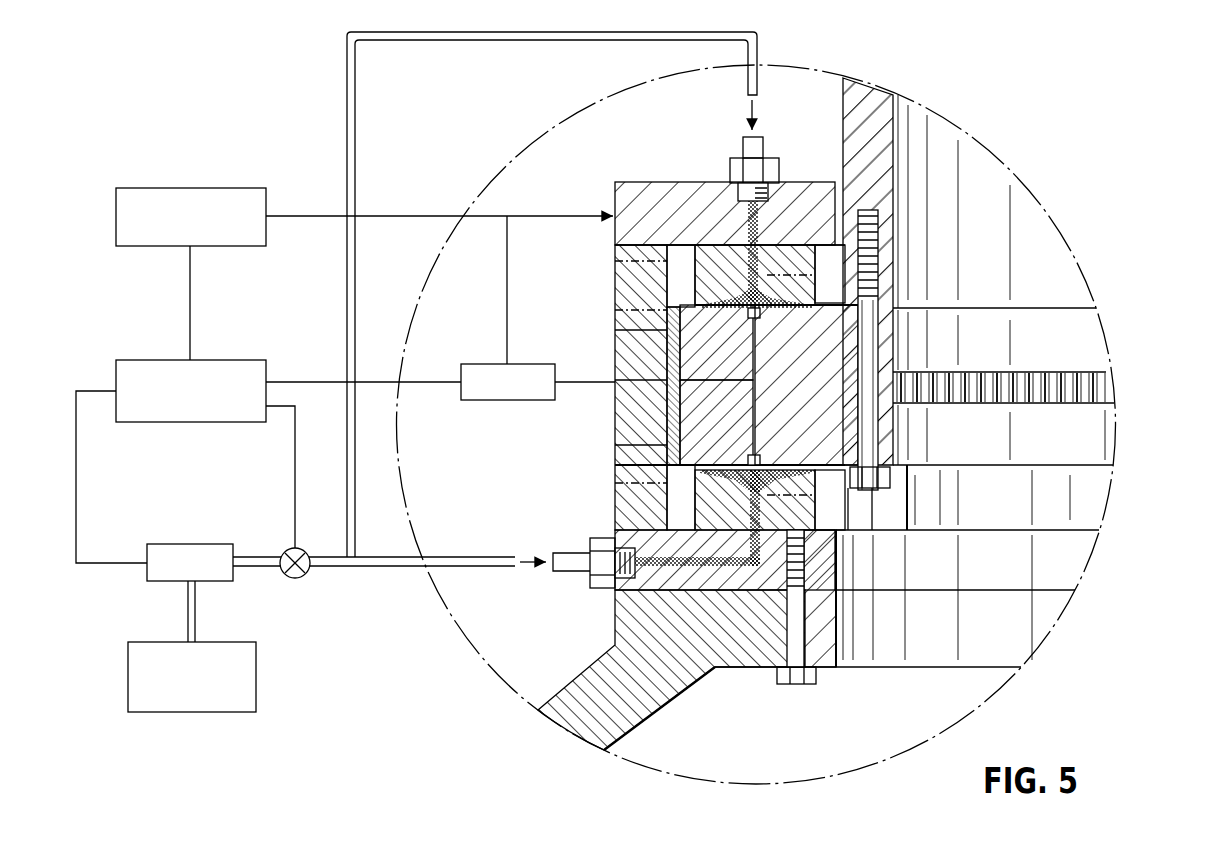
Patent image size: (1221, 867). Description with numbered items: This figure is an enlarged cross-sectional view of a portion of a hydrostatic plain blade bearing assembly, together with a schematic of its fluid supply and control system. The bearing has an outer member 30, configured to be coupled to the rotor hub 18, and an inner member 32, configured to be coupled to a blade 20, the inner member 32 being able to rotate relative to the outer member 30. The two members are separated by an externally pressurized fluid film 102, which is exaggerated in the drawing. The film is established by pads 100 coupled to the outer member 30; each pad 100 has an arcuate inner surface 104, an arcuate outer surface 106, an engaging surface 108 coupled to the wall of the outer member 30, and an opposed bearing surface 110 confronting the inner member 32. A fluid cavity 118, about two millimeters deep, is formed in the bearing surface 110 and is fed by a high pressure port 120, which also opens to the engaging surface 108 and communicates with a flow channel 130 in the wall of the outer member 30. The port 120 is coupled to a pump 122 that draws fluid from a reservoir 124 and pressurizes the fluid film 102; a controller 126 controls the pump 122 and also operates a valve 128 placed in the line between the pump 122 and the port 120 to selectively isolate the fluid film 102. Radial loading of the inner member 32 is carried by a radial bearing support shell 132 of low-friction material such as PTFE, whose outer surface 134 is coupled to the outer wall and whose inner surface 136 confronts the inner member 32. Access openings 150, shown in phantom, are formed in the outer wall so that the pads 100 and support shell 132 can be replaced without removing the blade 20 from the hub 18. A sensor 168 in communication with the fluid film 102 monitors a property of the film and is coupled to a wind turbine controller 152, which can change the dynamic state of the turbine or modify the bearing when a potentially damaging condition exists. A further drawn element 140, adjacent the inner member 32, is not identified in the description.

The rotor hub 18 is at (560, 740).
The blade 20 is at (888, 86).
The outer member 30 is at (612, 194).
The inner member 32 is at (897, 345).
The pad 100 is at (692, 283).
The fluid film 102 is at (733, 310).
The inner surface 104 is at (820, 258).
The outer surface 106 is at (677, 263).
The engaging surface 108 is at (708, 245).
The bearing surface 110 is at (802, 310).
The fluid cavity 118 is at (662, 600).
The port 120 is at (768, 258).
The pump 122 is at (158, 544).
The fluid reservoir 124 is at (134, 642).
The controller 126 is at (207, 361).
The valve 128 is at (300, 578).
The flow channel 130 is at (745, 218).
The radial bearing support shell 132 is at (614, 341).
The outer surface 134 is at (614, 405).
The inner surface 136 is at (680, 440).
The brake disc / flange 140 is at (1108, 379).
The access openings 150 is at (613, 262).
The wind turbine controller 152 is at (185, 190).
The sensor 168 is at (485, 364).